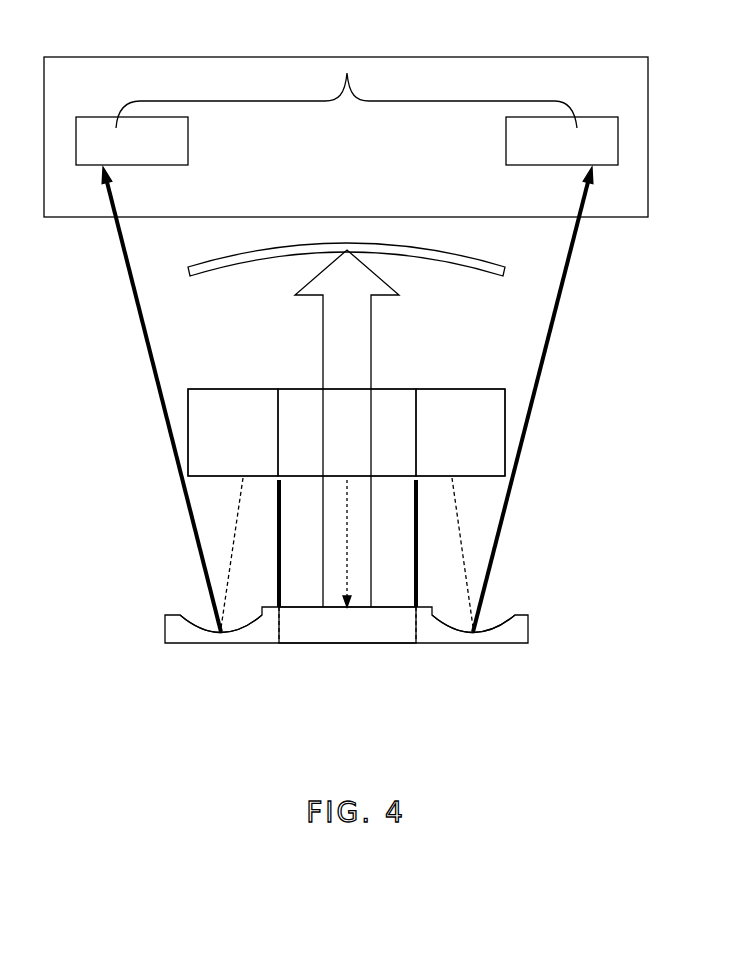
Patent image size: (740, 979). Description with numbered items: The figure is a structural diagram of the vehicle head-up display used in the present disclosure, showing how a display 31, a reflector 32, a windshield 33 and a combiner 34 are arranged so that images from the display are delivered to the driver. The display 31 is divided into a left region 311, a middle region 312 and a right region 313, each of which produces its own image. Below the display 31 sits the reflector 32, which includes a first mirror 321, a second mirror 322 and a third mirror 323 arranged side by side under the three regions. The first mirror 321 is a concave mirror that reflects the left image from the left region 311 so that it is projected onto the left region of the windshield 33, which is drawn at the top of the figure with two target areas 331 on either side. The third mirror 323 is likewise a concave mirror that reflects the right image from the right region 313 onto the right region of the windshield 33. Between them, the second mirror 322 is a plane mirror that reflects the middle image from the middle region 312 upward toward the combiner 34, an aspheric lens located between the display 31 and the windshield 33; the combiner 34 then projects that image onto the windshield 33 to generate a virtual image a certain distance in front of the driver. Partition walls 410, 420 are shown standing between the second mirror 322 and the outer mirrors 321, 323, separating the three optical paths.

The windshield 33 is at (122, 57).
The light sensors 331 is at (347, 73).
The combiner 34 is at (467, 265).
The display 31 is at (355, 398).
The left region 311 is at (225, 400).
The middle region 312 is at (297, 400).
The right region 313 is at (450, 400).
The reflector 32 is at (375, 658).
The first mirror 321 is at (222, 645).
The second mirror 322 is at (353, 645).
The third mirror 323 is at (476, 645).
The first partition wall 410 is at (278, 545).
The second partition wall 420 is at (417, 545).